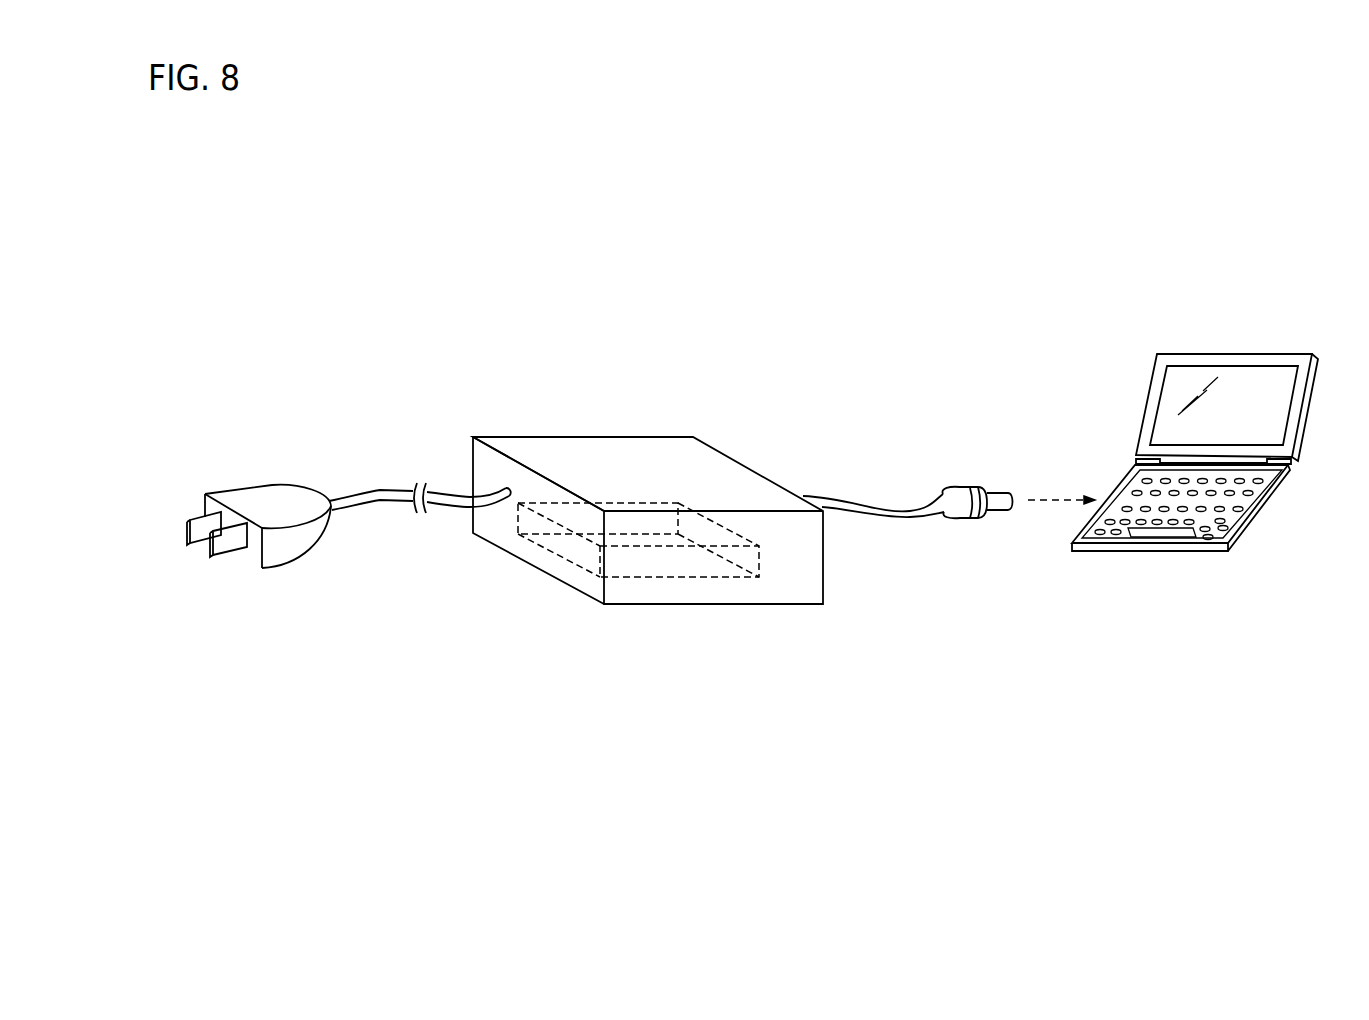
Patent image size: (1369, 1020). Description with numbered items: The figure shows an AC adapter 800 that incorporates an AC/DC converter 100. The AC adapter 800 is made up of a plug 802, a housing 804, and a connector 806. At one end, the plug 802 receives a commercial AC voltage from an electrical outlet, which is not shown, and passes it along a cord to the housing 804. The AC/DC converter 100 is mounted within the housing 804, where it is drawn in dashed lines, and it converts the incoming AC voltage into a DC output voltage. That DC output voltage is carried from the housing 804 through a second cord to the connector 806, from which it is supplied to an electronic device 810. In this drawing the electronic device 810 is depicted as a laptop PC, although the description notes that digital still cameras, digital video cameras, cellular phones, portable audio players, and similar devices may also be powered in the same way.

The AC adapter 800 is at (730, 536).
The plug 802 is at (267, 500).
The housing 804 is at (572, 437).
The AC/DC converter 100 is at (670, 563).
The connector 806 is at (963, 487).
The electronic device 810 is at (1247, 353).